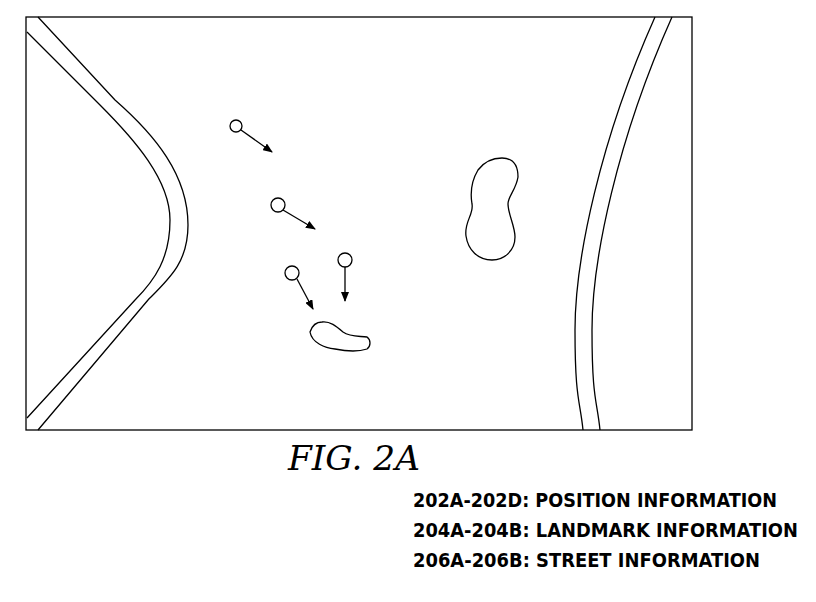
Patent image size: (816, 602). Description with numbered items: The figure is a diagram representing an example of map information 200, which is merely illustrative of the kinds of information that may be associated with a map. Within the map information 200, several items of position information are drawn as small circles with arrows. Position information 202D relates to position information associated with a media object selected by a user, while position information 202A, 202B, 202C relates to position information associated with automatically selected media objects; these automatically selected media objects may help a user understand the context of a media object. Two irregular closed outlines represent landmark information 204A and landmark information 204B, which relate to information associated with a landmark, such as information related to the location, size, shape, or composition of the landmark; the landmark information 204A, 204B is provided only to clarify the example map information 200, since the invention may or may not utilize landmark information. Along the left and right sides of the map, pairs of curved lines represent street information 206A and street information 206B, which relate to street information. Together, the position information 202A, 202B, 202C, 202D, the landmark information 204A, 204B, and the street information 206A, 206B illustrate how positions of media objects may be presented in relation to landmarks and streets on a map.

The map information 200 is at (380, 105).
The position information 202A is at (232, 120).
The position information 202B is at (284, 200).
The position information 202C is at (352, 263).
The position information 202D is at (285, 279).
The landmark information 204A is at (370, 345).
The landmark information 204B is at (503, 157).
The street information 206A is at (170, 230).
The street information 206B is at (600, 257).